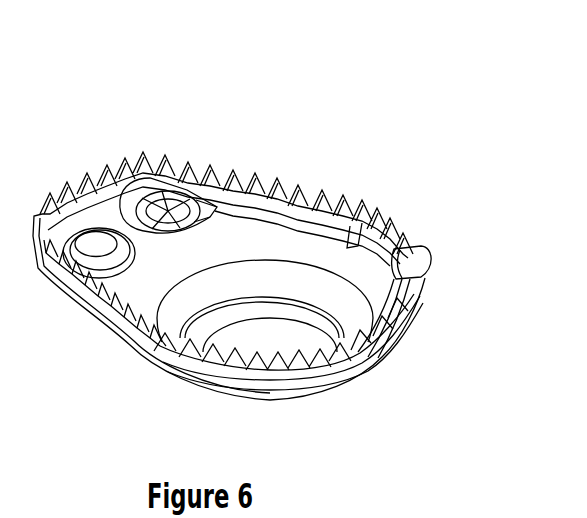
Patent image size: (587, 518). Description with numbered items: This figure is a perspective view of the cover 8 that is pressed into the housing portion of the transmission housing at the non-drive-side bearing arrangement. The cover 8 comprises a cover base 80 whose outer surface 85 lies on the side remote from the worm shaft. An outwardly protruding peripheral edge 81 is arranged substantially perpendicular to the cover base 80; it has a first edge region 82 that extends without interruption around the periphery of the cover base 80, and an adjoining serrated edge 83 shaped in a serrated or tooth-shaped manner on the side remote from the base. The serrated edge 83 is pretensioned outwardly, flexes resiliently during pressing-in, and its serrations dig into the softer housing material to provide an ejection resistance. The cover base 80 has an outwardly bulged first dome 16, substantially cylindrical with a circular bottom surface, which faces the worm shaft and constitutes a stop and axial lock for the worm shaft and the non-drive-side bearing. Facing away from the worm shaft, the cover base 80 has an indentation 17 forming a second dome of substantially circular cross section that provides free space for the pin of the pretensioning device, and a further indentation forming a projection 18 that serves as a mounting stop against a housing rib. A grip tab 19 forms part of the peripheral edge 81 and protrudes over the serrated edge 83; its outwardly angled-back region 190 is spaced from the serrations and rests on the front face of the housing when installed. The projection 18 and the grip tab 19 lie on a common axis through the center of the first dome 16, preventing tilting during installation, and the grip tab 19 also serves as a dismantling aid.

The cover 8 is at (313, 70).
The first dome 16 is at (257, 332).
The indentation 17 is at (97, 240).
The projection 18 is at (165, 210).
The grip tab 19 is at (407, 305).
The cover base 80 is at (352, 255).
The peripheral edge 81 is at (322, 373).
The first edge region 82 is at (322, 373).
The serrated edge 83 is at (362, 355).
The outer surface 85 is at (298, 200).
The angled-back region 190 is at (430, 258).